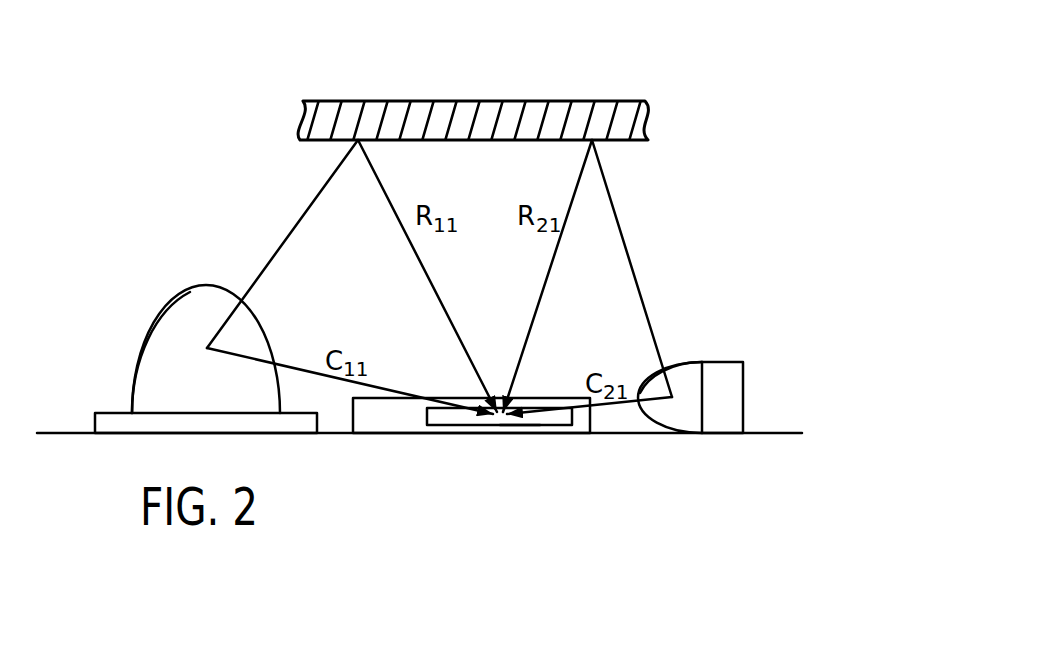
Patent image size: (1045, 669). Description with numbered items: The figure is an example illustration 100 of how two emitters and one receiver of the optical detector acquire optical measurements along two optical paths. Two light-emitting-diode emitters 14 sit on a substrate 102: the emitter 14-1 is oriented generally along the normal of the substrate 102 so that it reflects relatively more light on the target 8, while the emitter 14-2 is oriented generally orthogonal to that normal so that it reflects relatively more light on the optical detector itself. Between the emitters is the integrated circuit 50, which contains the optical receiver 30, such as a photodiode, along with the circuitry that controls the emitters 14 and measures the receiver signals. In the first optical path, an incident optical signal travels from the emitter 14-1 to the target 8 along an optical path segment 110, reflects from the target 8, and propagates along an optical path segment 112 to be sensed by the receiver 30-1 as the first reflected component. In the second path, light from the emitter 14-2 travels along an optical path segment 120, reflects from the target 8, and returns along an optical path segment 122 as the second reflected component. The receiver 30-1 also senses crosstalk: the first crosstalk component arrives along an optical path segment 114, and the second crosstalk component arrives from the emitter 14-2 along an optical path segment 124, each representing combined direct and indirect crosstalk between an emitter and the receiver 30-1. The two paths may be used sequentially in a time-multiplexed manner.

The example illustration 100 is at (749, 40).
The target 8 is at (472, 101).
The substrate 102 is at (770, 434).
The emitter 14 is at (173, 297).
The emitter 14-1 is at (158, 310).
The emitter 14-2 is at (672, 364).
The optical path segment 110 is at (280, 240).
The optical path segment 112 is at (423, 273).
The optical path segment 114 is at (303, 367).
The optical path segment 120 is at (632, 267).
The optical path segment 122 is at (548, 273).
The optical path segment 124 is at (611, 407).
The integrated circuit 50 is at (452, 397).
The optical receiver 30 is at (523, 433).
The receiver 30-1 is at (528, 427).